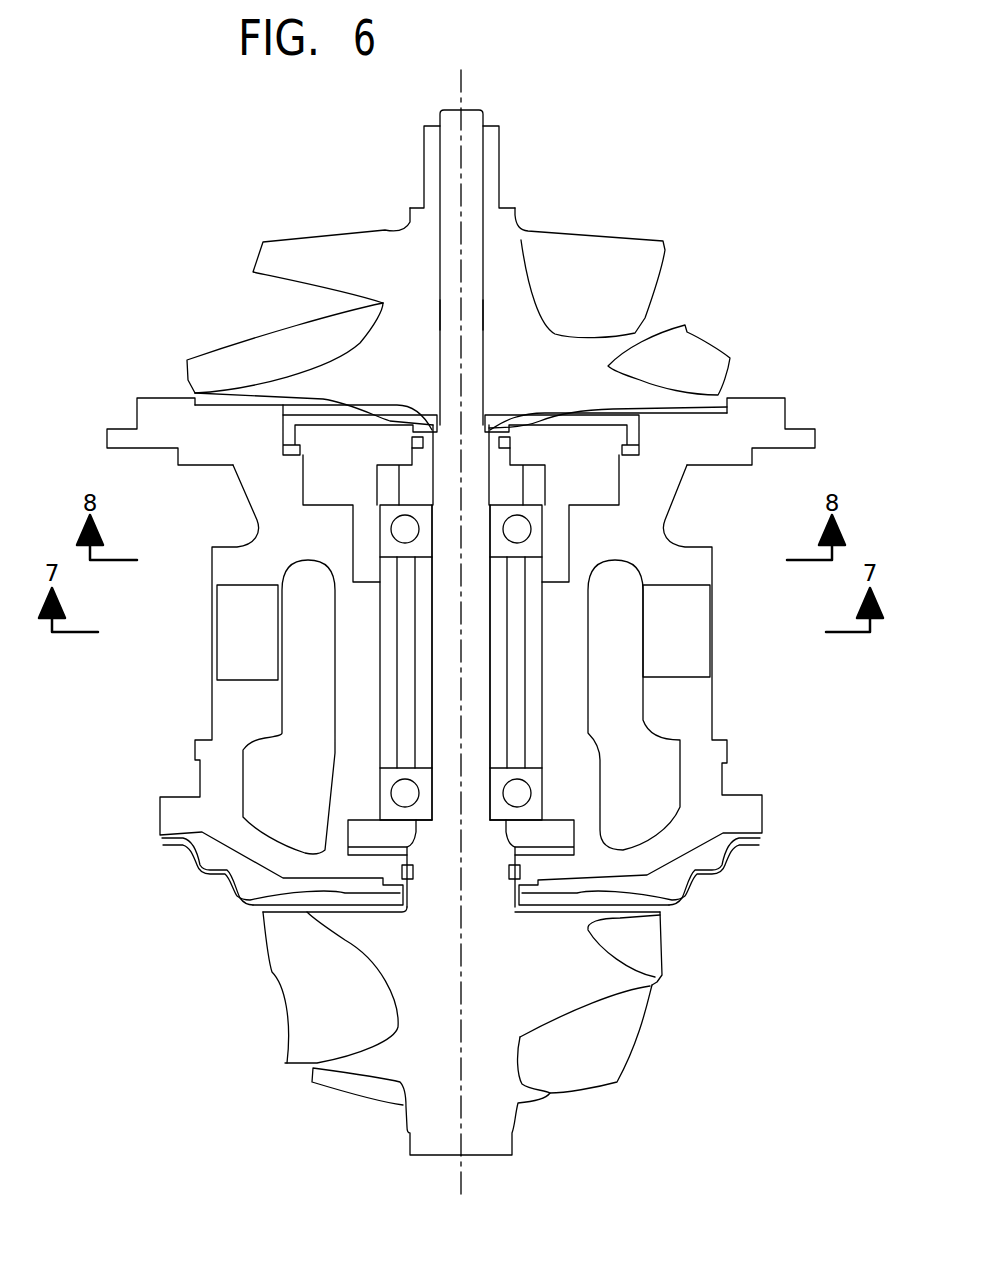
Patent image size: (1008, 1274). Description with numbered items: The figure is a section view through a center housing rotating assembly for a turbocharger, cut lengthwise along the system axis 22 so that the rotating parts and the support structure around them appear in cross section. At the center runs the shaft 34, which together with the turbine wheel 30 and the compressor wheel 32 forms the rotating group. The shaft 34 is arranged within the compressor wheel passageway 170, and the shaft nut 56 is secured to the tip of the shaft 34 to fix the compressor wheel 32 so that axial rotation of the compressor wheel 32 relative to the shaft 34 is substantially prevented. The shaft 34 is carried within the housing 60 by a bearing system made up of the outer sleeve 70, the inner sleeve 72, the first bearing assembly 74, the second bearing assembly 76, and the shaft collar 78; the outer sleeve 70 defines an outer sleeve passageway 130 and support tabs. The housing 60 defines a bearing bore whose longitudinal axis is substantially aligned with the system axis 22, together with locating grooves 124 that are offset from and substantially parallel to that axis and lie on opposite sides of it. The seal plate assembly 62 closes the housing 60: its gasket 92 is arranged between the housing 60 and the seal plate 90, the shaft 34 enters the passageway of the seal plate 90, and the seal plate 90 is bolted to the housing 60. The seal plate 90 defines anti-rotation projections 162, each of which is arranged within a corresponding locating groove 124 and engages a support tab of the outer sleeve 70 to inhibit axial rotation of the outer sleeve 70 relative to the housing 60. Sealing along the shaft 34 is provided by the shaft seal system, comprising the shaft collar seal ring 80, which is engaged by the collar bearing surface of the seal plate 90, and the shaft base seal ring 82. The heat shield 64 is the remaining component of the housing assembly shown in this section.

The system axis 22 is at (465, 92).
The shaft nut 56 is at (490, 140).
The shaft 34 is at (470, 180).
The compressor wheel 32 is at (368, 282).
The compressor wheel passageway 170 is at (485, 312).
The shaft collar seal ring 80 is at (523, 426).
The seal plate assembly 62 is at (657, 446).
The gasket 92 is at (617, 458).
The seal plate 90 is at (508, 478).
The shaft collar 78 is at (522, 485).
The locating groove 124 is at (353, 548).
The anti-rotation projection 162 is at (362, 585).
The first bearing assembly 74 is at (405, 543).
The outer sleeve 70 is at (535, 652).
The inner sleeve 72 is at (500, 672).
The outer sleeve passageway 130 is at (517, 705).
The housing 60 is at (692, 713).
The second bearing assembly 76 is at (540, 778).
The shaft base seal ring 82 is at (525, 870).
The heat shield 64 is at (682, 882).
The turbine wheel 30 is at (580, 995).